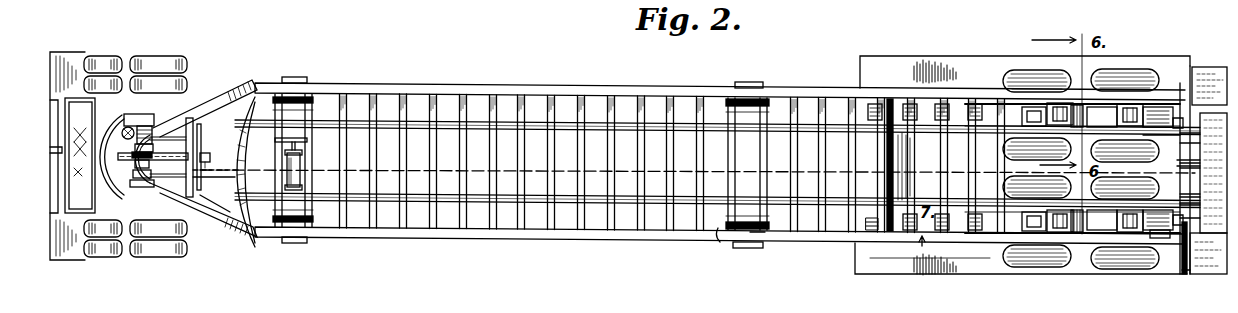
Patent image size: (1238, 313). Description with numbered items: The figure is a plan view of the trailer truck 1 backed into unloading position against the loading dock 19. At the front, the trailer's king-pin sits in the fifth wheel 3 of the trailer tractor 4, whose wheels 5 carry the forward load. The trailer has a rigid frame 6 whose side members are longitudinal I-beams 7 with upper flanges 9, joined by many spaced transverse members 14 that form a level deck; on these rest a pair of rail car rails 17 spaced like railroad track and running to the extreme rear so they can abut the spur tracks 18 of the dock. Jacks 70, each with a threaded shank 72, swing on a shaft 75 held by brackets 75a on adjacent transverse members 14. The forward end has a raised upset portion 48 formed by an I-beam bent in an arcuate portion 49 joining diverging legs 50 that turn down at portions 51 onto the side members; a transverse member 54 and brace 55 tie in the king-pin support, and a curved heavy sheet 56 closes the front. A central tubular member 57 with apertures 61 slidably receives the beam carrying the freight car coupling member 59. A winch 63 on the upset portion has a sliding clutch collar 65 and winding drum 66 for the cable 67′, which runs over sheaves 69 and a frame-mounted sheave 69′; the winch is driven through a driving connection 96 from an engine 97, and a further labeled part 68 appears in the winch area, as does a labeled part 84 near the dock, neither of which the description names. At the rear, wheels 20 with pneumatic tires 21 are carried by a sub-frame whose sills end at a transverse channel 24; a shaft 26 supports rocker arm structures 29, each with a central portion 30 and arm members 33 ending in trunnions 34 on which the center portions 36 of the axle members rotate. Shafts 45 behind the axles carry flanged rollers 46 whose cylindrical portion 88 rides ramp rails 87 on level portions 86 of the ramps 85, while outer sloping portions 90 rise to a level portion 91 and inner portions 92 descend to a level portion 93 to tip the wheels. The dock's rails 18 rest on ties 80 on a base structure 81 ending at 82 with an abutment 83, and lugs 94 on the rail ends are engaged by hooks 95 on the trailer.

The trailer truck 1 is at (270, 79).
The fifth wheel 3 is at (110, 135).
The trailer tractor 4 is at (60, 257).
The wheels 5 is at (185, 62).
The frame 6 is at (545, 238).
The I-beams 7 is at (462, 235).
The upper flanges 9 is at (661, 237).
The transverse members 14 is at (590, 114).
The rail car rails 17 is at (747, 198).
The spur tracks 18 is at (1193, 133).
The loading dock 19 is at (1190, 270).
The wheels 20 is at (1091, 229).
The pneumatic tires 21 is at (1120, 78).
The channel 24 is at (1177, 163).
The shaft 26 is at (1080, 150).
The rocker arm structures 29 is at (1058, 110).
The central portion 30 is at (1080, 118).
The arm members 33 is at (1100, 228).
The trunnions 34 is at (1023, 113).
The center portions 36 is at (1033, 235).
The shafts 45 is at (1143, 135).
The flanged rollers 46 is at (1157, 232).
The upset portion 48 is at (247, 227).
The arcuate portion 49 is at (112, 165).
The diverging legs 50 is at (210, 214).
The downwardly turned portions 51 is at (245, 93).
The transverse member 54 is at (180, 154).
The brace 55 is at (144, 126).
The arcuate curved heavy sheet 56 is at (240, 158).
The tubular member 57 is at (194, 139).
The railroad freight car coupling member 59 is at (205, 158).
The apertures 61 is at (154, 184).
The winch 63 is at (128, 127).
The sliding clutch collar 65 is at (128, 186).
The winding drum 66 is at (152, 144).
The cable 67′ is at (623, 167).
The shaft 68 is at (144, 186).
The sheaves 69 is at (187, 183).
The sheave 69′ is at (300, 160).
The jacks 70 is at (753, 230).
The threaded shank 72 is at (1197, 182).
The shaft 75 is at (287, 216).
The brackets 75a is at (721, 237).
The ties 80 is at (1207, 272).
The base structure 81 is at (1207, 78).
The end of base 82 is at (1181, 83).
The abutment 83 is at (1183, 269).
The rear body 84 is at (857, 250).
The ramps 85 is at (979, 263).
The level portions 86 is at (930, 118).
The rails 87 is at (868, 220).
The cylindrical portion 88 is at (1142, 112).
The sloping portions 90 is at (917, 263).
The level portion 91 is at (1080, 255).
The downward sloping portions 92 is at (875, 164).
The level portion 93 is at (984, 141).
The lugs 94 is at (1187, 218).
The hooks 95 is at (1182, 127).
The driving connection 96 is at (138, 114).
The engine 97 is at (112, 162).